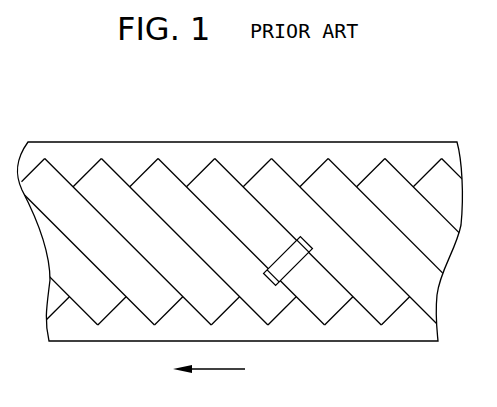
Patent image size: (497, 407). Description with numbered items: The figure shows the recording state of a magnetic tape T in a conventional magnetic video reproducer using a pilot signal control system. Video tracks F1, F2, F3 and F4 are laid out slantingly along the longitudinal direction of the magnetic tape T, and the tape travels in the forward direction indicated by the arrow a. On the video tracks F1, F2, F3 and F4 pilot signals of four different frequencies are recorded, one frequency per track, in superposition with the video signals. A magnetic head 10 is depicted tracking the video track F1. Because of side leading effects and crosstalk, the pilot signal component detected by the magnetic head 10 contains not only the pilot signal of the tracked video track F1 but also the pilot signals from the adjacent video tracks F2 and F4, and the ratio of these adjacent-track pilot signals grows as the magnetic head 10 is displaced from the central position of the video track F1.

The magnetic tape T is at (248, 212).
The magnetic head 10 is at (278, 253).
The video track F1 is at (318, 179).
The video track F2 is at (151, 179).
The video track F3 is at (204, 179).
The video track F4 is at (261, 179).
The arrow a is at (209, 379).